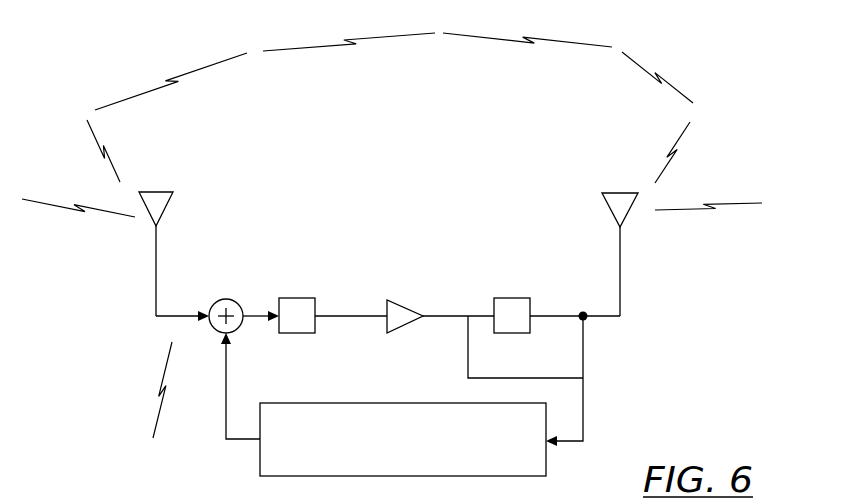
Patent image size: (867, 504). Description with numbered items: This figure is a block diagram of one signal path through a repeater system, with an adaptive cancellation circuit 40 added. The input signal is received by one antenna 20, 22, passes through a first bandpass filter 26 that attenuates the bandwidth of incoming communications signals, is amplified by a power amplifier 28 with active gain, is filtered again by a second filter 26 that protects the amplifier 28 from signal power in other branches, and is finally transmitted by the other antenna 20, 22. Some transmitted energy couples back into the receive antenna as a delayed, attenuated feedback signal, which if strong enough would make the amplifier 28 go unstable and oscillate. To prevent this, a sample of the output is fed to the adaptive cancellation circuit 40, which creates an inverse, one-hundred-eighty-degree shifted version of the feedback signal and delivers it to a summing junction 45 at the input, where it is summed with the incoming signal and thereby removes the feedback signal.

The link antenna 20 is at (159, 191).
The coverage antenna 22 is at (630, 192).
The summing junction 45 is at (228, 298).
The bandpass filter 26 is at (298, 298).
The power amplifier 28 is at (394, 300).
The adaptive cancellation circuit 40 is at (260, 465).